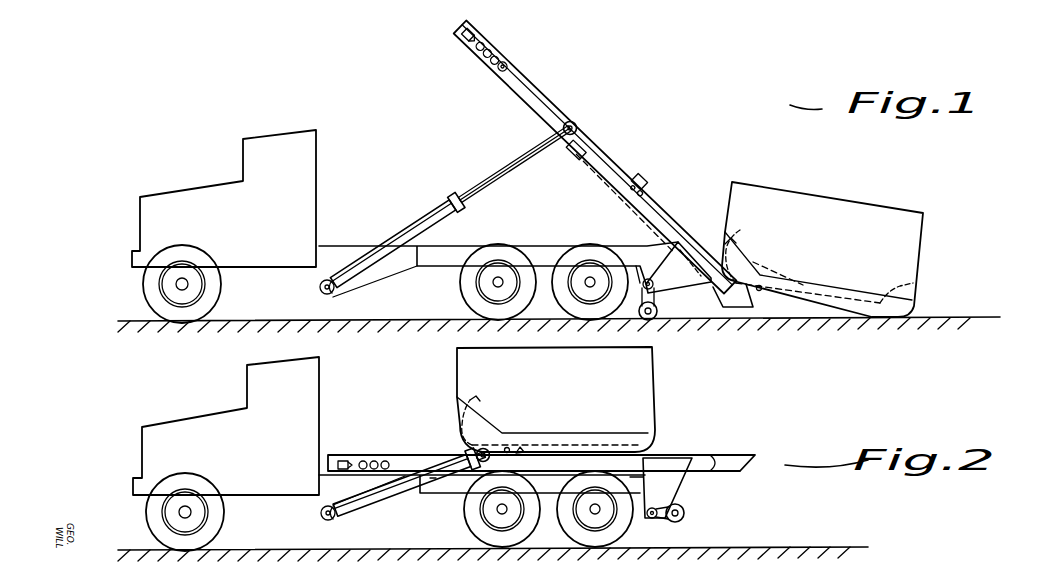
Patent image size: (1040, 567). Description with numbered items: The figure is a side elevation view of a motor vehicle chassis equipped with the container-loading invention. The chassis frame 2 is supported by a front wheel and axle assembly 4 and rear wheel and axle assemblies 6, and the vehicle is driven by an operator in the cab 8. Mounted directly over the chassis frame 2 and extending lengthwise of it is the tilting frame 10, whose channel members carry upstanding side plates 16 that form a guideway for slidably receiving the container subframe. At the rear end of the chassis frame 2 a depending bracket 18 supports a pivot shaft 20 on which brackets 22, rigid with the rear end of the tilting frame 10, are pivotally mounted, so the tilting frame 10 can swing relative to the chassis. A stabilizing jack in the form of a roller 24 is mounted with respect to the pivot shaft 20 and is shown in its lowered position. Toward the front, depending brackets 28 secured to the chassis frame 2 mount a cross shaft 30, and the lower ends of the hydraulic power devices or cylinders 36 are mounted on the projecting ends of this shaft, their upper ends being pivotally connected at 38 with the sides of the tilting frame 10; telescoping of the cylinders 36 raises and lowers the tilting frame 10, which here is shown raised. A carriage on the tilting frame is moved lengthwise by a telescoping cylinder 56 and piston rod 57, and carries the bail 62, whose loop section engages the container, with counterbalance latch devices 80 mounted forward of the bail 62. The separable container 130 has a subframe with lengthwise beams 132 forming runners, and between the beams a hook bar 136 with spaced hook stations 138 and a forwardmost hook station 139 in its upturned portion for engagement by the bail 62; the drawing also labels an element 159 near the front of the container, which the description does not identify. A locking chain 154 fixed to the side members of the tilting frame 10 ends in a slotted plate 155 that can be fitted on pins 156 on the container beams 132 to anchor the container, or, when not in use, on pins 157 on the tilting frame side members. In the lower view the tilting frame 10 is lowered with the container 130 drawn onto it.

In FIG. 1, the chassis frame 2 is at (445, 266).
In FIG. 2, the chassis frame 2 is at (443, 493).
In FIG. 1, the front wheel and axle assembly 4 is at (202, 305).
In FIG. 2, the front wheel and axle assembly 4 is at (207, 532).
In FIG. 1, the rear wheel and axle assemblies 6 is at (467, 307).
In FIG. 2, the rear wheel and axle assemblies 6 is at (477, 535).
In FIG. 1, the cab 8 is at (243, 167).
In FIG. 2, the cab 8 is at (247, 397).
In FIG. 1, the tilting frame 10 is at (585, 164).
In FIG. 2, the tilting frame 10 is at (514, 442).
In FIG. 1, the side plates 16 is at (532, 111).
In FIG. 2, the side plates 16 is at (420, 460).
In FIG. 1, the depending bracket 18 is at (622, 252).
In FIG. 2, the depending bracket 18 is at (630, 477).
In FIG. 1, the pivot shaft 20 is at (651, 281).
In FIG. 2, the pivot shaft 20 is at (657, 498).
In FIG. 1, the brackets 22 is at (678, 282).
In FIG. 2, the brackets 22 is at (682, 485).
In FIG. 1, the roller 24 is at (660, 310).
In FIG. 2, the roller 24 is at (687, 518).
In FIG. 1, the depending brackets 28 is at (388, 268).
In FIG. 2, the depending brackets 28 is at (392, 503).
In FIG. 1, the cross shaft 30 is at (322, 293).
In FIG. 2, the cross shaft 30 is at (320, 519).
In FIG. 1, the hydraulic power devices or cylinders 36 is at (402, 230).
In FIG. 2, the hydraulic power devices or cylinders 36 is at (410, 482).
In FIG. 1, the pivotal connection 38 is at (580, 128).
In FIG. 2, the pivotal connection 38 is at (483, 455).
In FIG. 1, the telescoping cylinder 56 is at (512, 88).
In FIG. 1, the piston rod 57 is at (598, 157).
In FIG. 1, the bail 62 is at (715, 255).
In FIG. 2, the bail 62 is at (612, 437).
In FIG. 1, the counterbalance latch devices 80 is at (646, 181).
In FIG. 2, the counterbalance latch devices 80 is at (520, 447).
In FIG. 1, the container 130 is at (912, 235).
In FIG. 2, the container 130 is at (635, 378).
In FIG. 1, the beams 132 is at (833, 288).
In FIG. 2, the beams 132 is at (575, 438).
In FIG. 1, the hook bar 136 is at (925, 285).
In FIG. 1, the hook stations 138 is at (745, 277).
In FIG. 2, the hook stations 138 is at (490, 425).
In FIG. 1, the forwardmost hook station 139 is at (727, 244).
In FIG. 1, the locking chains 154 is at (472, 50).
In FIG. 2, the locking chains 154 is at (366, 460).
In FIG. 1, the plate 155 is at (500, 60).
In FIG. 1, the pins 156 is at (762, 292).
In FIG. 2, the pins 156 is at (432, 478).
In FIG. 1, the pins 157 is at (485, 65).
In FIG. 2, the pins 157 is at (385, 466).
In FIG. 2, the engaging hook 159 is at (475, 407).